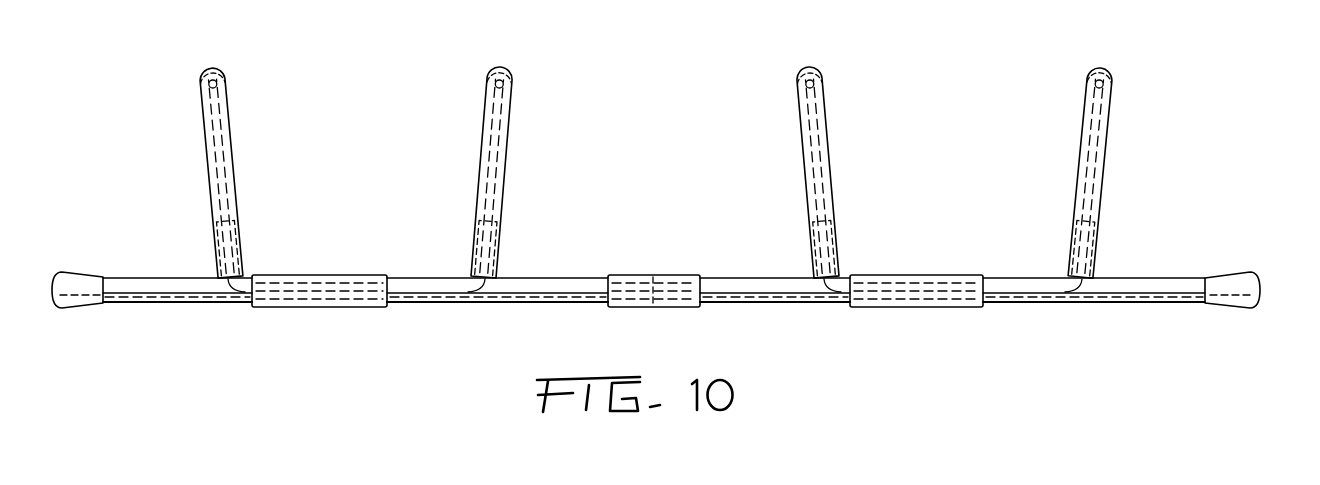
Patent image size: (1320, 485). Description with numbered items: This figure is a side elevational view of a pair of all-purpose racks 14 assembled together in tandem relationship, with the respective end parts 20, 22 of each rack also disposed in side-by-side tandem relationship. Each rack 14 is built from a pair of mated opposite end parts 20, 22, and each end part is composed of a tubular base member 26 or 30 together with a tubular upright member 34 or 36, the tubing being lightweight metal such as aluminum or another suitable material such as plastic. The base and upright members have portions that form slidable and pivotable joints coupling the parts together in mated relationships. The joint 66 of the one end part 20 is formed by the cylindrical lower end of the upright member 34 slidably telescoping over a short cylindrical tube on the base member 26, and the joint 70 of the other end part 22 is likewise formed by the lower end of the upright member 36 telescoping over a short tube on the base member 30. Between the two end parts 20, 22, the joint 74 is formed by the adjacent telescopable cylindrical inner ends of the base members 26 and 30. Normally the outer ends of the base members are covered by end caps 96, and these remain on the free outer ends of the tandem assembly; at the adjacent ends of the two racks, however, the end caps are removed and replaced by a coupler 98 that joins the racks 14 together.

The all-purpose rack 14 is at (666, 204).
The end part 20 is at (506, 166).
The end part 22 is at (835, 166).
The tubular base member 26 is at (137, 294).
The tubular base member 30 is at (537, 294).
The tubular upright member 34 is at (211, 64).
The tubular upright member 36 is at (509, 64).
The joint 66 is at (241, 245).
The joint 70 is at (499, 248).
The joint 74 is at (338, 316).
The end cap 96 is at (83, 297).
The coupler 98 is at (662, 275).